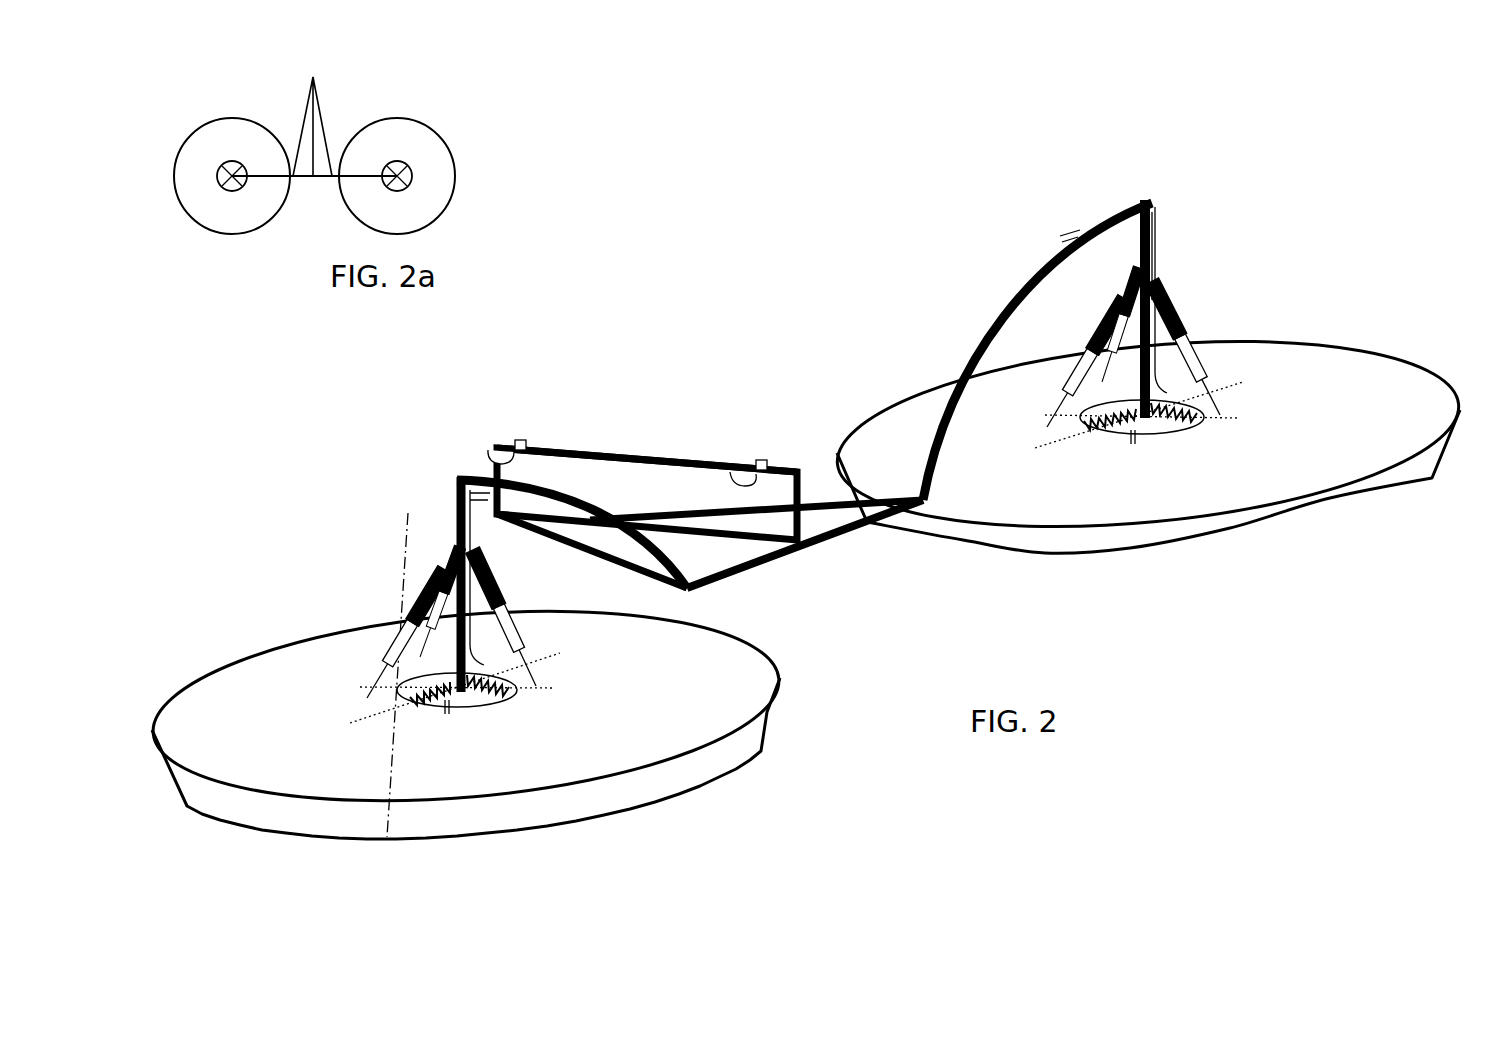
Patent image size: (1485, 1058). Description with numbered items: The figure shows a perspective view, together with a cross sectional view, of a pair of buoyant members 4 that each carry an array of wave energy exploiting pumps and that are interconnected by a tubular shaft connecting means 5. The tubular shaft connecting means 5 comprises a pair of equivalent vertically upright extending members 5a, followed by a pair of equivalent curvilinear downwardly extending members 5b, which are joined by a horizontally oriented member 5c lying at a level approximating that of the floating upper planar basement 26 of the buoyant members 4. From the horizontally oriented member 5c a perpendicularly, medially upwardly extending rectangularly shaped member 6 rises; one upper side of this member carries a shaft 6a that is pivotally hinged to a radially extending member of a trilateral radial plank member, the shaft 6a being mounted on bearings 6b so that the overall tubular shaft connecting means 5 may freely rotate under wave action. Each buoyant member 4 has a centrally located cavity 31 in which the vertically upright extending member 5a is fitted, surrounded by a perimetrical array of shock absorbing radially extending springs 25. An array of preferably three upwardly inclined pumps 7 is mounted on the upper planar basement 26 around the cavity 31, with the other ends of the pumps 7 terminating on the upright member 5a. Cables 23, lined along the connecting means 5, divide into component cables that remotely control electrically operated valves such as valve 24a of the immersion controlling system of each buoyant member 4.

In FIG. 2A, the buoyant member 4 is at (200, 122).
In FIG. 2, the buoyant member 4 is at (222, 647).
In FIG. 2A, the tubular shaft connecting means 5 is at (313, 180).
In FIG. 2, the tubular shaft connecting means 5 is at (775, 446).
In FIG. 2, the vertically upright extending member 5a is at (460, 520).
In FIG. 2, the curvilinear downwardly extending member 5b is at (570, 493).
In FIG. 2, the horizontally oriented member 5c is at (815, 542).
In FIG. 2, the rectangularly shaped member 6 is at (652, 427).
In FIG. 2, the shaft 6a is at (641, 458).
In FIG. 2, the bearings 6b is at (753, 453).
In FIG. 2, the upwardly inclined pumps 7 is at (440, 567).
In FIG. 2, the cables 23 is at (480, 537).
In FIG. 2, the electrically operated valve 24a is at (447, 715).
In FIG. 2, the shock absorbing radially extending springs 25 is at (500, 690).
In FIG. 2, the upper planar basement 26 is at (1307, 388).
In FIG. 2, the centrally located cavity 31 is at (1165, 425).